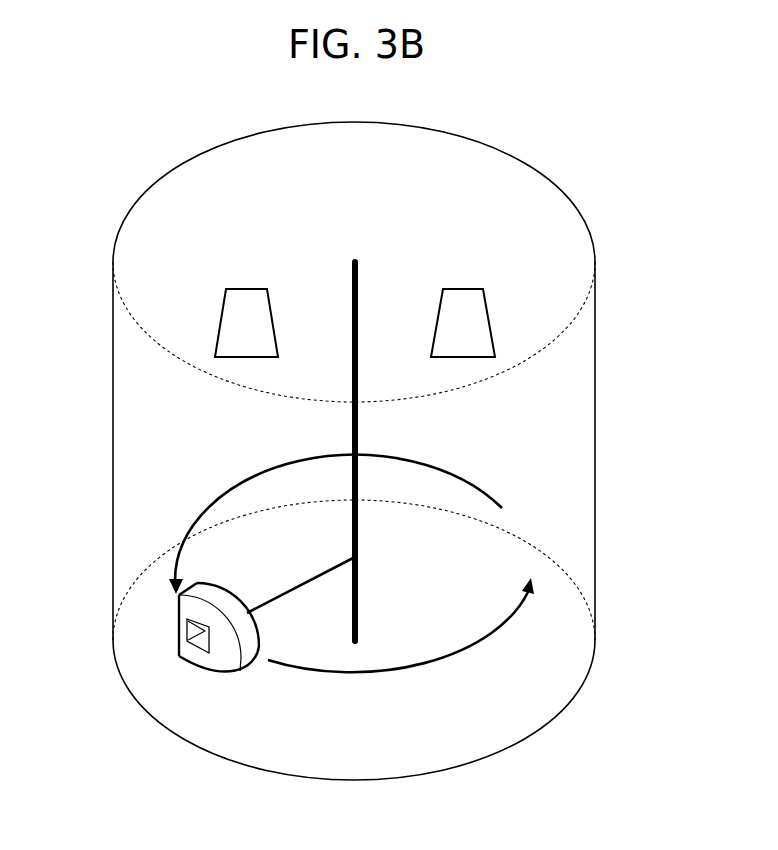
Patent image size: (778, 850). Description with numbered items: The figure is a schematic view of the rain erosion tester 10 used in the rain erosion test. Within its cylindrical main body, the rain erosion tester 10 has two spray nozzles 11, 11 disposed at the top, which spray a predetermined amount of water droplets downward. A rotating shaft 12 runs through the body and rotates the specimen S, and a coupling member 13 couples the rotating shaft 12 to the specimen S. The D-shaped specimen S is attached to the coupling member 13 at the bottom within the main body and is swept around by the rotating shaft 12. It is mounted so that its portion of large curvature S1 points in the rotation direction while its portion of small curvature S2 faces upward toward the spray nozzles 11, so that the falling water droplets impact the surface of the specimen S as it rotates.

The rain erosion tester 10 is at (500, 149).
The spray nozzle 11 is at (228, 336).
The rotating shaft 12 is at (357, 305).
The coupling member 13 is at (280, 596).
The specimen S is at (229, 638).
The portion of large curvature S1 is at (252, 657).
The portion of small curvature S2 is at (221, 600).